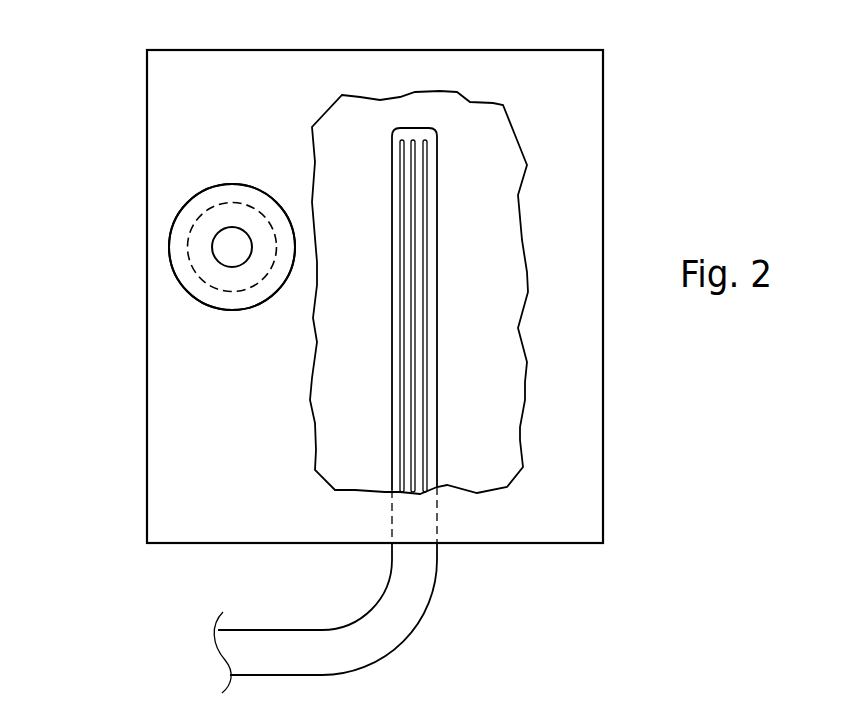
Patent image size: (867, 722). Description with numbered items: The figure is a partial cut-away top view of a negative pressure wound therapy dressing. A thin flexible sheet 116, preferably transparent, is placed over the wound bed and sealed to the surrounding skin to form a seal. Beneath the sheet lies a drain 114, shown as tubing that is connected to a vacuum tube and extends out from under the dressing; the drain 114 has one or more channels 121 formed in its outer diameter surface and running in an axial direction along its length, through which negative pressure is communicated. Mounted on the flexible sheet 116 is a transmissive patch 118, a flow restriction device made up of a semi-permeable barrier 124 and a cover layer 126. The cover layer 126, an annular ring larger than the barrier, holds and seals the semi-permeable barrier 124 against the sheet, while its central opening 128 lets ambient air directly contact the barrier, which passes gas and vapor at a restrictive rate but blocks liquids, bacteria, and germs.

The drain 114 is at (420, 140).
The flexible sheet 116 is at (192, 66).
The transmissive patch 118 is at (186, 180).
The channels 121 is at (397, 147).
The semi-permeable barrier 124 is at (204, 283).
The cover layer 126 is at (181, 258).
The opening 128 is at (225, 243).